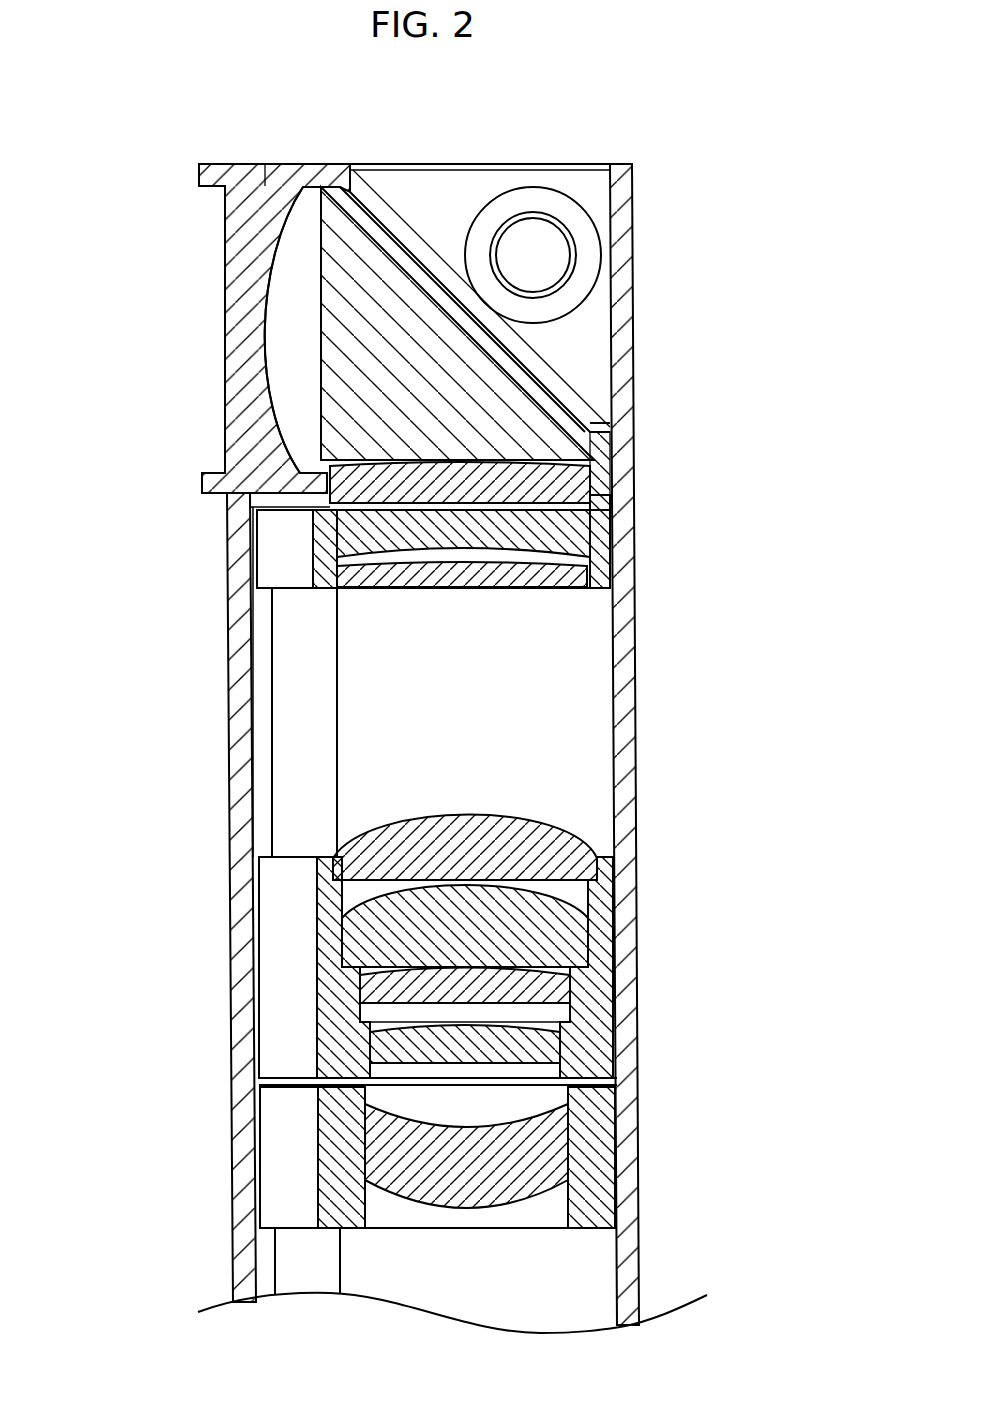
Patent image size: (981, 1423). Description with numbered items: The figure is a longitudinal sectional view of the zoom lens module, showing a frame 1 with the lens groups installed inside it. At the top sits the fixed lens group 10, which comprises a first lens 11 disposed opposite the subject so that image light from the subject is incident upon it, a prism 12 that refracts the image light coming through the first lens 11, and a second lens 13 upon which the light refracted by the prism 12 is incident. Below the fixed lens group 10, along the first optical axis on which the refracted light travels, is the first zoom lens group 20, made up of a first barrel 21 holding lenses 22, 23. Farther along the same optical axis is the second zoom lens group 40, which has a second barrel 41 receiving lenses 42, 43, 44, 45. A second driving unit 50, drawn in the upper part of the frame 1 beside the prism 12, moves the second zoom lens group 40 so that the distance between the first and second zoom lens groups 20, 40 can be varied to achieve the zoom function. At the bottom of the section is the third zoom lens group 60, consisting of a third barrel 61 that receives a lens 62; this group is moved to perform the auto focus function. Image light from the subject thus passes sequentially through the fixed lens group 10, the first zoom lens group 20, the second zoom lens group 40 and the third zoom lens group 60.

The frame 1 is at (616, 690).
The fixed lens group 10 is at (361, 300).
The first lens 11 is at (233, 357).
The prism 12 is at (343, 298).
The second lens 13 is at (355, 452).
The first zoom lens group 20 is at (426, 676).
The first barrel 21 is at (596, 562).
The lens 22 is at (575, 520).
The lens 23 is at (487, 582).
The second zoom lens group 40 is at (430, 913).
The second barrel 41 is at (592, 947).
The lens 42 is at (487, 817).
The lens 43 is at (552, 913).
The lens 44 is at (562, 982).
The lens 45 is at (540, 1042).
The second driving unit 50 is at (511, 179).
The third zoom lens group 60 is at (430, 1190).
The third barrel 61 is at (596, 1190).
The lens 62 is at (546, 1143).